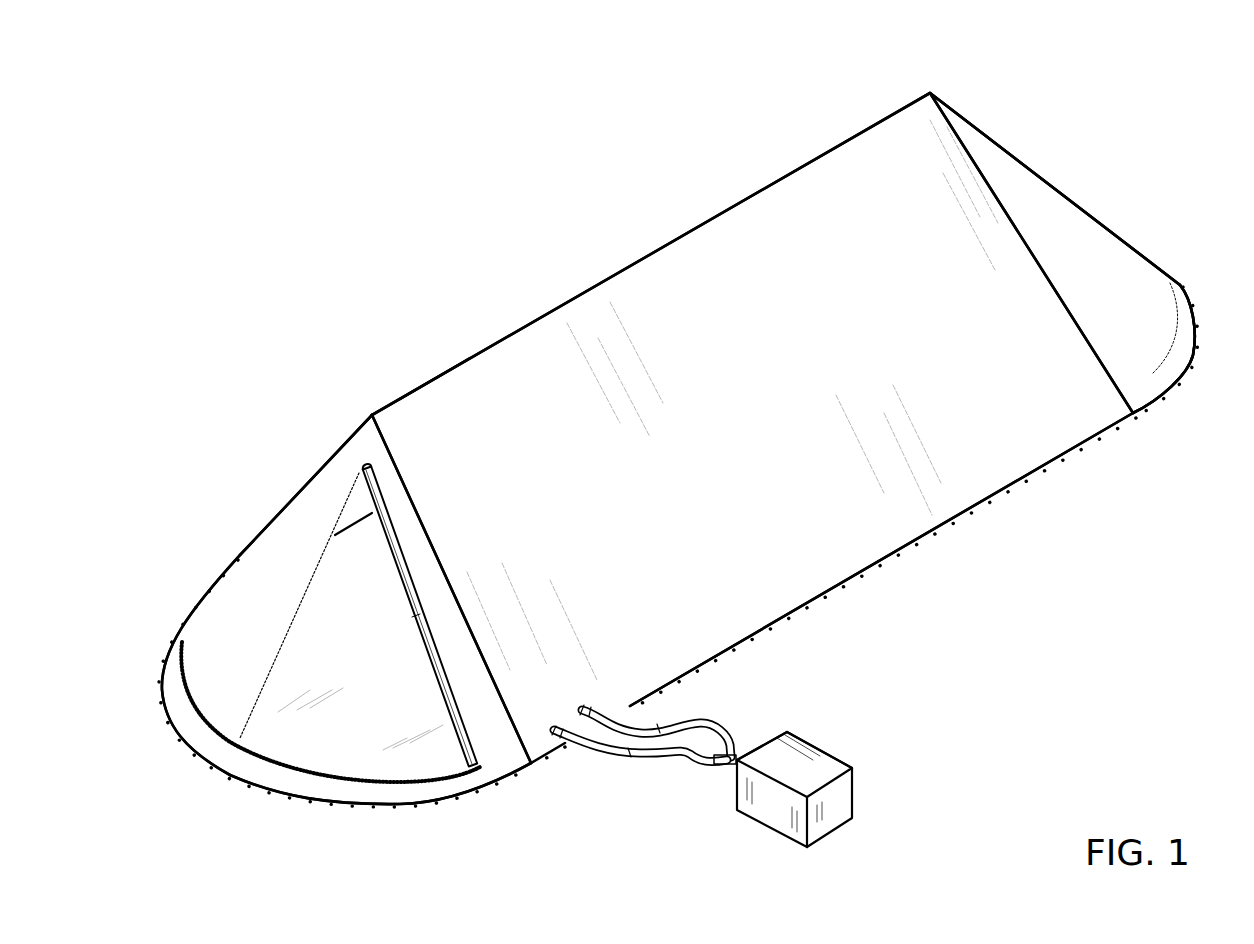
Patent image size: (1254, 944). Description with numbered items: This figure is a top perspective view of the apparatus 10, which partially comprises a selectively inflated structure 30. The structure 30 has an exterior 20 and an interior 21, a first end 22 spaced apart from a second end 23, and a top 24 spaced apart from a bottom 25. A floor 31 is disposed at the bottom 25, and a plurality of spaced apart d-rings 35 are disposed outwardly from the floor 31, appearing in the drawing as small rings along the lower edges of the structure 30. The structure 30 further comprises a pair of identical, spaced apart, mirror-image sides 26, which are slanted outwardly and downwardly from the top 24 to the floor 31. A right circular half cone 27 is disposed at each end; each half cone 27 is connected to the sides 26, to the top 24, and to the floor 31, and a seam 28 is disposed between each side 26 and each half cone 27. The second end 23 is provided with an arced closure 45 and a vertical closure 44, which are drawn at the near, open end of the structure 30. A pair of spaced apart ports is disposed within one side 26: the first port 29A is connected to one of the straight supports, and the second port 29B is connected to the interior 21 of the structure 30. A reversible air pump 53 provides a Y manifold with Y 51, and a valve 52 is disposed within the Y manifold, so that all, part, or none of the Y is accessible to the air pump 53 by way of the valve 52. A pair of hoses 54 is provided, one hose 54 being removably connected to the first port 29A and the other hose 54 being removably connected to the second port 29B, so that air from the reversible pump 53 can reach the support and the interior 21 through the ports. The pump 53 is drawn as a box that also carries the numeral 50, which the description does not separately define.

The apparatus 10 is at (912, 676).
The exterior 20 is at (715, 212).
The interior 21 is at (322, 578).
The first end 22 is at (190, 763).
The second end 23 is at (1152, 254).
The top 24 is at (430, 372).
The bottom 25 is at (790, 640).
The sides 26 is at (330, 450).
The right circular half cone 27 is at (1093, 250).
The seam 28 is at (410, 513).
The first port 29A is at (553, 741).
The second port 29B is at (590, 707).
The selectively inflated structure 30 is at (500, 306).
The floor 31 is at (410, 765).
The d-rings 35 is at (148, 650).
The vertical closure 44 is at (300, 603).
The arced closure 45 is at (267, 755).
The pump unit 50 is at (880, 795).
The Y 51 is at (740, 756).
The valve 52 is at (716, 764).
The reversible air pump 53 is at (827, 767).
The hoses 54 is at (630, 758).